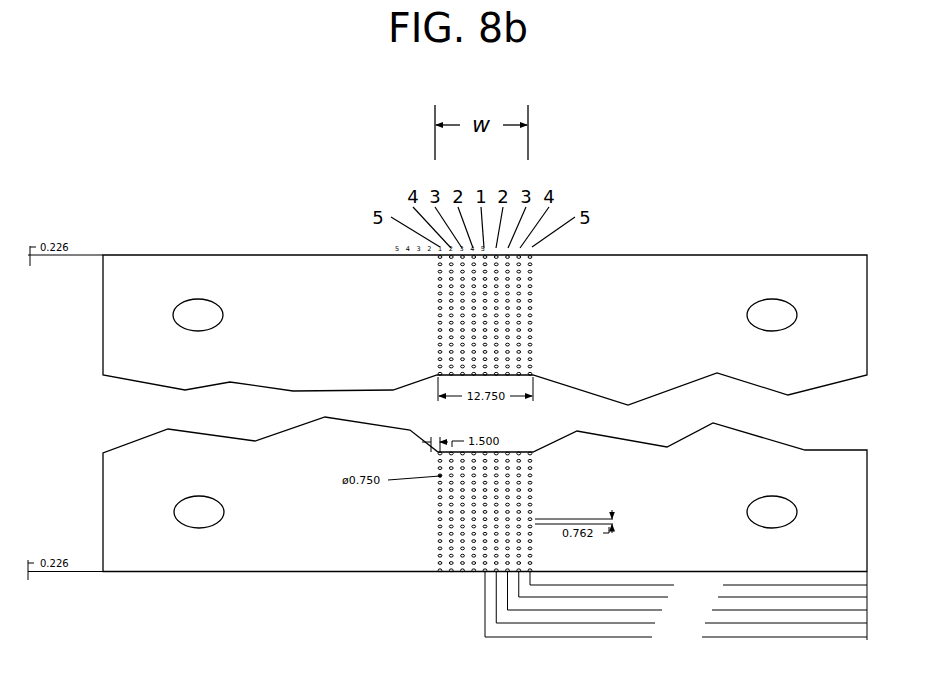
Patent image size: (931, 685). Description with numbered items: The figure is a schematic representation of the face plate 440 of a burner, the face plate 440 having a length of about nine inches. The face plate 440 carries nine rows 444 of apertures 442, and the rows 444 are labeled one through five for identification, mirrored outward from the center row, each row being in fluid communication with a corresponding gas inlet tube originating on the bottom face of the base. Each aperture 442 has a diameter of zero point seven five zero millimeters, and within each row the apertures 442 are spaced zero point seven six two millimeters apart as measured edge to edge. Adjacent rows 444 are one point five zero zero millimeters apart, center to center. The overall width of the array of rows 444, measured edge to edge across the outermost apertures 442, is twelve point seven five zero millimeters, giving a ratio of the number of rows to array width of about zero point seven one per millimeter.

The face plate 440 is at (438, 513).
The apertures 442 is at (156, 357).
The rows of apertures 444 is at (611, 608).